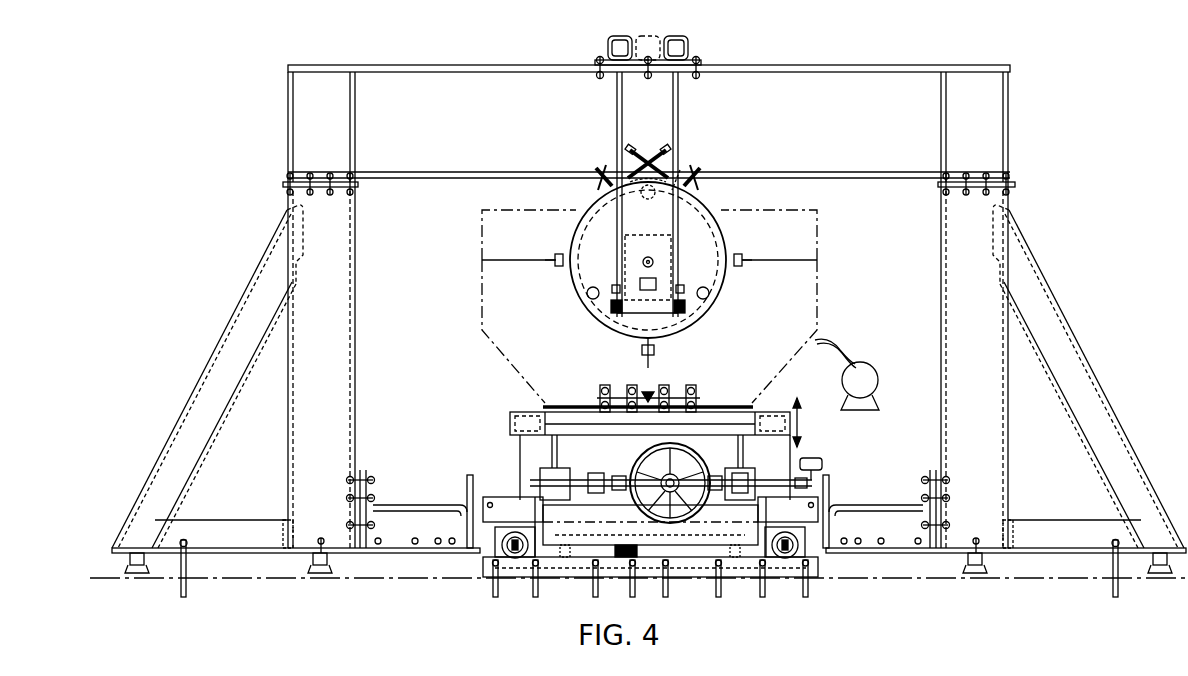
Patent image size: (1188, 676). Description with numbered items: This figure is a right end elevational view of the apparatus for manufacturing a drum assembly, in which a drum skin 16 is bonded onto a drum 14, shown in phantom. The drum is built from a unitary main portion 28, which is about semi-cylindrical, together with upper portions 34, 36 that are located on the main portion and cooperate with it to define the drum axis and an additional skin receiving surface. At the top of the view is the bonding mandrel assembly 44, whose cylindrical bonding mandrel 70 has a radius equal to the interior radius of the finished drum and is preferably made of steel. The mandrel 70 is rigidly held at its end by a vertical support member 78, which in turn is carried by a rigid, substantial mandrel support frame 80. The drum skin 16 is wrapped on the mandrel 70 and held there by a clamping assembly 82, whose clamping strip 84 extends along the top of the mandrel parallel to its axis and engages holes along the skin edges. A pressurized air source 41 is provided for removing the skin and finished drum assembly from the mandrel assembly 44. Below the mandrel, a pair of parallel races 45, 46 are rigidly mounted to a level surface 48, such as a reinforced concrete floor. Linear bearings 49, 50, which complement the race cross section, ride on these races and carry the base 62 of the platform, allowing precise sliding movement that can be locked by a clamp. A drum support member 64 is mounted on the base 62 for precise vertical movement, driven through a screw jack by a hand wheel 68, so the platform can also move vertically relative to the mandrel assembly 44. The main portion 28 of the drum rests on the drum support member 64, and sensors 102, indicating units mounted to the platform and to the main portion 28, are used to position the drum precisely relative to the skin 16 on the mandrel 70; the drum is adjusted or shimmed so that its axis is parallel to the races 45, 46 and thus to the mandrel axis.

The drum 14 is at (850, 246).
The drum skin 16 is at (704, 203).
The main portion 28 is at (534, 350).
The upper portion 34 is at (497, 248).
The upper portion 36 is at (774, 248).
The pressurized air source 41 is at (874, 374).
The bonding mandrel assembly 44 is at (605, 157).
The race 45 is at (808, 570).
The race 46 is at (494, 568).
The level surface 48 is at (268, 577).
The linear bearing 49 is at (822, 510).
The linear bearing 50 is at (497, 497).
The base 62 is at (470, 503).
The drum support member 64 is at (510, 428).
The hand wheel 68 is at (646, 455).
The bonding mandrel 70 is at (574, 214).
The vertical support member 78 is at (679, 129).
The mandrel support frame 80 is at (1032, 122).
The clamping assembly 82 is at (648, 147).
The clamping strip 84 is at (684, 167).
The sensors 102 is at (553, 262).